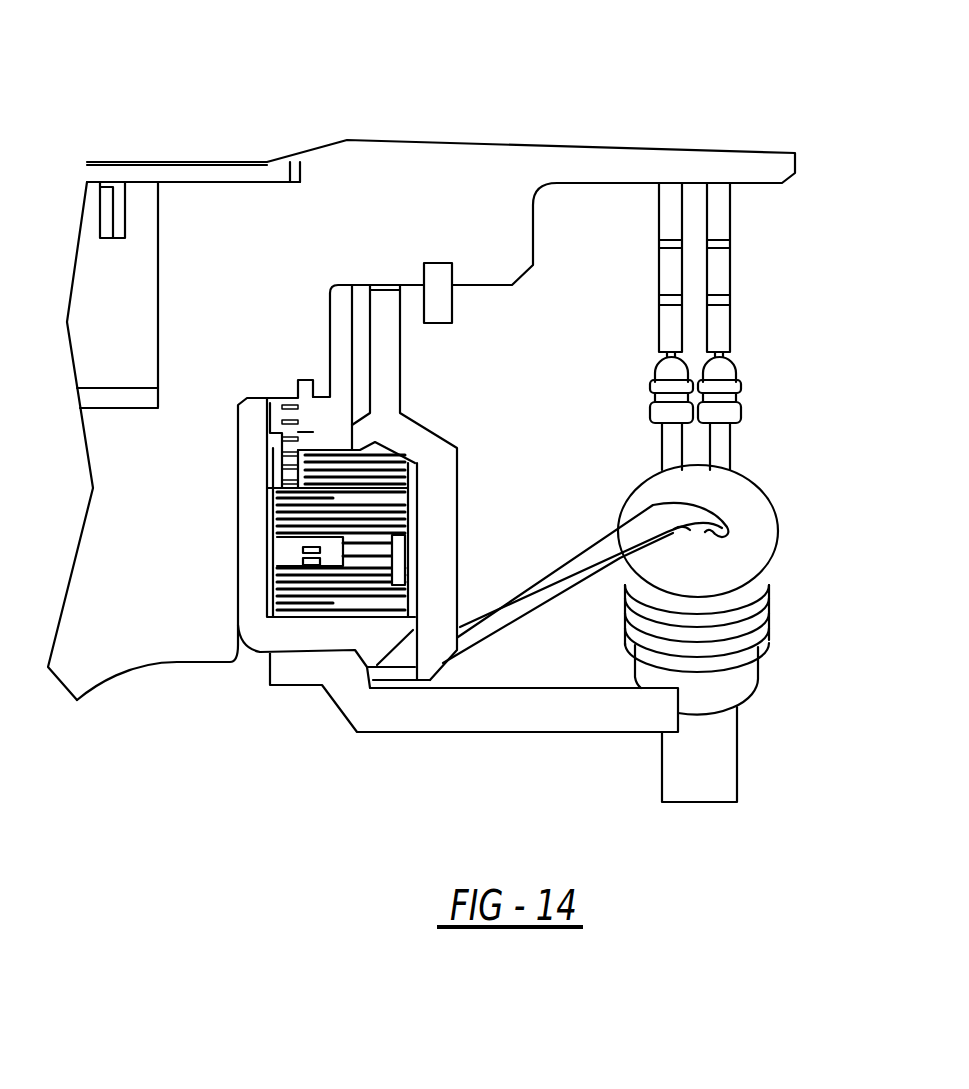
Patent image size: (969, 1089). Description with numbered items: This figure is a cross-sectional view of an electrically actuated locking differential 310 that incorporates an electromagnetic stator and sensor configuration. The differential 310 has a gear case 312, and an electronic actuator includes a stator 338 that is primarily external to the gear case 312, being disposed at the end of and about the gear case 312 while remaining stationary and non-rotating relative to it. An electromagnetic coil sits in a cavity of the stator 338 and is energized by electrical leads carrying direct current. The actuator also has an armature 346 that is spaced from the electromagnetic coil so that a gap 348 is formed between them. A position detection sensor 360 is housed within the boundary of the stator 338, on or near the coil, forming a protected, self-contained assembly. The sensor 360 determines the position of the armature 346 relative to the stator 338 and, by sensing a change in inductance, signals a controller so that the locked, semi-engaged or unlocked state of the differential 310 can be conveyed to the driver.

The electrically actuated locking differential 310 is at (607, 107).
The gear case 312 is at (363, 182).
The stator 338 is at (268, 632).
The armature 346 is at (442, 488).
The gap 348 is at (412, 628).
The sensor 360 is at (398, 558).